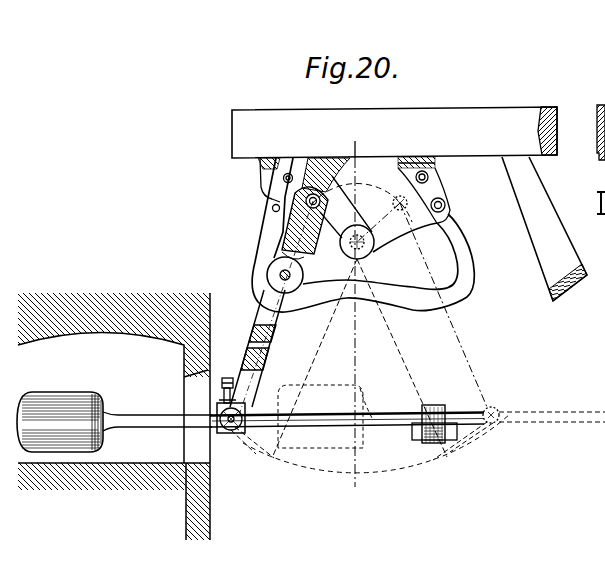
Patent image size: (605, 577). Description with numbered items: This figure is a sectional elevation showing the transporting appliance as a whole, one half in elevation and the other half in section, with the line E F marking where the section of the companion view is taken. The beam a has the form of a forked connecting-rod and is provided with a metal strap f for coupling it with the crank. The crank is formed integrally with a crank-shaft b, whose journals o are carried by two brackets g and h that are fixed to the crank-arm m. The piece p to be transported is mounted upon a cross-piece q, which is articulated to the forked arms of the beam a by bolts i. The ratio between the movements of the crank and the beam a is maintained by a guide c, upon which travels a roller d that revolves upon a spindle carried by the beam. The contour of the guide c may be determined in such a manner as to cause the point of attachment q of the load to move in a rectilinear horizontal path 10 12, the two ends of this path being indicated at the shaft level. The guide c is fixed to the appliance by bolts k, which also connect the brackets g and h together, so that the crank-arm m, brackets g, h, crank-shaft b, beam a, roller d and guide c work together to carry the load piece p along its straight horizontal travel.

The crank-arm m is at (394, 132).
The piece to be transported p is at (63, 392).
The bolts i is at (240, 414).
The rectilinear horizontal path 10 is at (231, 431).
The cross-piece q is at (227, 378).
The guide c is at (348, 290).
The metal strap f is at (262, 206).
The bolts k is at (273, 207).
The bracket h is at (322, 197).
The crank-shaft b is at (301, 274).
The roller d is at (291, 275).
The beam a is at (268, 318).
The journals o is at (357, 242).
The bracket g is at (400, 211).
The section line E F E is at (354, 140).
The section line E F is at (357, 335).
The rectilinear horizontal path 12 is at (491, 407).